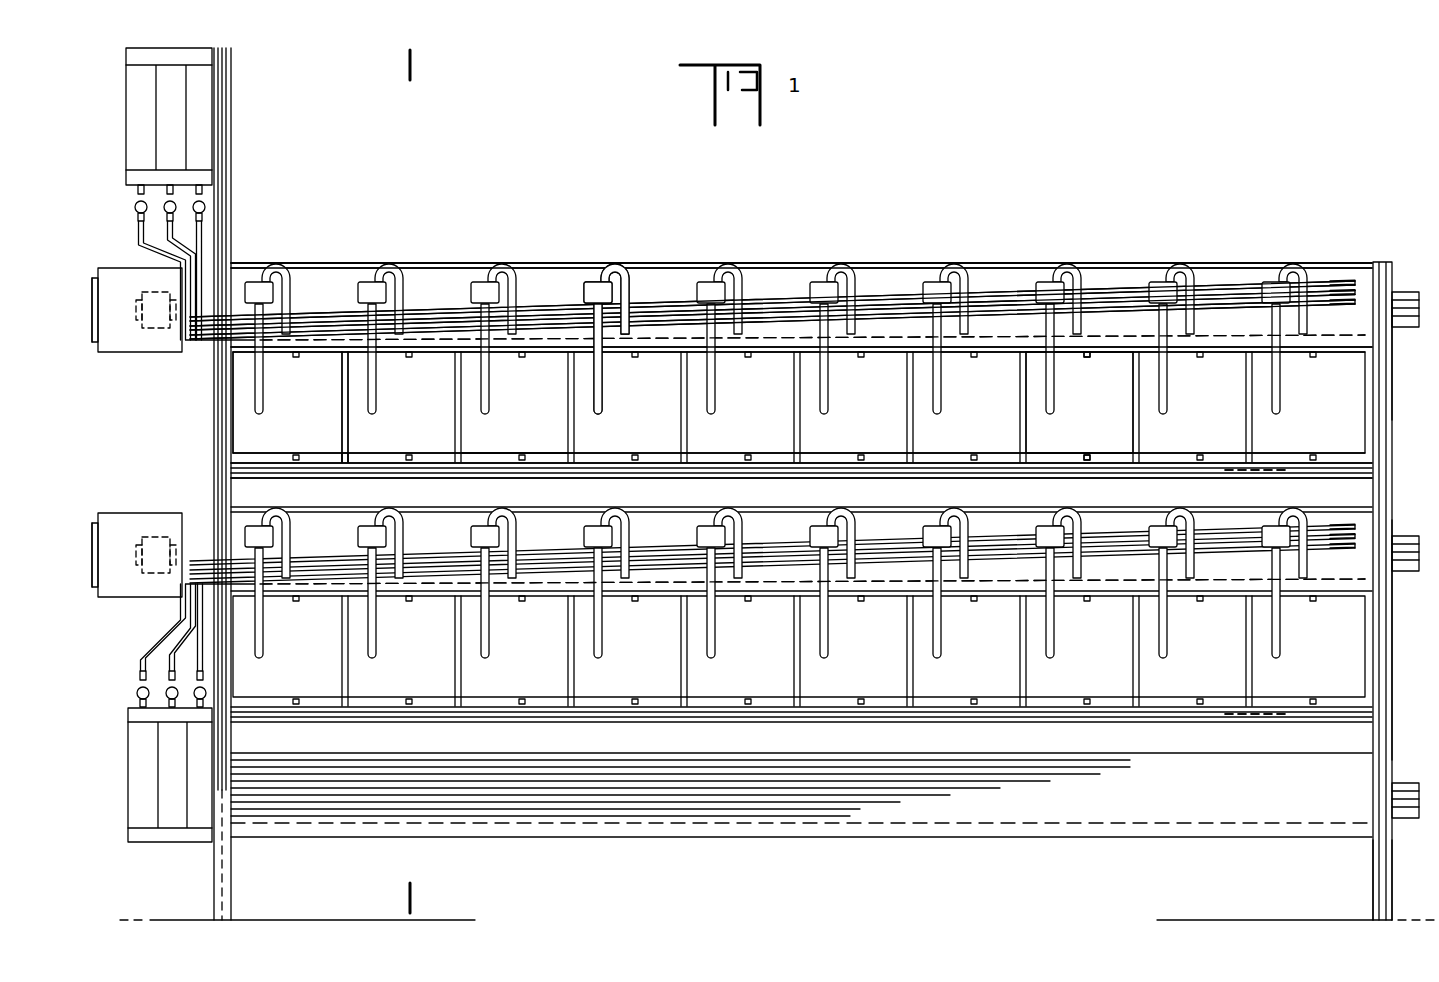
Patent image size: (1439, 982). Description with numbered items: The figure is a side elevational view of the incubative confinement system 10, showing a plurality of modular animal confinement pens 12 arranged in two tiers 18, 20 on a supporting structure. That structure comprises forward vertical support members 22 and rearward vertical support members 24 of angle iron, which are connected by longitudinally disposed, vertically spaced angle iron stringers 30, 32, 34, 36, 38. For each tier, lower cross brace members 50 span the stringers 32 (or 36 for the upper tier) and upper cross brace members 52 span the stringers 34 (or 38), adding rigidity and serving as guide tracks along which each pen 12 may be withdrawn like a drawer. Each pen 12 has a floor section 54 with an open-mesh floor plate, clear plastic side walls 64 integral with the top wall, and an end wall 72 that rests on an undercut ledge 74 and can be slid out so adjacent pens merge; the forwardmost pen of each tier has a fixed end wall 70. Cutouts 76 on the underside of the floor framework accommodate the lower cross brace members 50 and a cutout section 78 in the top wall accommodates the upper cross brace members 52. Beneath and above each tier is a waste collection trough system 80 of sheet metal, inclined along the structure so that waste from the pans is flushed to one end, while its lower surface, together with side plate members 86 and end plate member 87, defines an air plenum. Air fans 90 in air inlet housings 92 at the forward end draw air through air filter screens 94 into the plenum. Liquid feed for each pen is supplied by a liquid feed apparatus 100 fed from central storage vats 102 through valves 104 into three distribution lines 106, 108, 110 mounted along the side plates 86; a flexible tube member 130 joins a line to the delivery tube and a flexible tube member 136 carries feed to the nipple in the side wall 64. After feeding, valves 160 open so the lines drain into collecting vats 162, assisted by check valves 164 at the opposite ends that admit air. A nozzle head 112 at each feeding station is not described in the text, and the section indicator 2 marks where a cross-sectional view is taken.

The incubative confinement system 10 is at (1140, 190).
The modular animal confinement pen 12 is at (318, 402).
The tier 18 is at (1395, 655).
The tier 20 is at (1395, 400).
The forward vertical support member 22 is at (226, 222).
The rearward vertical support member 24 is at (1373, 860).
The longitudinal stringer 30 is at (1198, 824).
The longitudinal stringer 32 is at (1215, 716).
The longitudinal stringer 34 is at (1225, 582).
The longitudinal stringer 36 is at (1213, 472).
The longitudinal stringer 38 is at (1218, 338).
The lower cross brace member 50 is at (1085, 468).
The upper cross brace member 52 is at (1095, 351).
The floor section 54 is at (1096, 406).
The side wall segment 64 is at (557, 432).
The end wall 70 is at (236, 438).
The end wall 72 is at (349, 436).
The undercut ledge 74 is at (345, 464).
The cutout 76 is at (1088, 456).
The cutout section 78 is at (1091, 357).
The waste collection trough system 80 is at (1408, 290).
The side plate member 86 is at (771, 263).
The end plate member 87 is at (1393, 376).
The air fan 90 is at (146, 296).
The air inlet housing 92 is at (130, 339).
The air filter screen 94 is at (95, 270).
The liquid feed apparatus 100 is at (759, 438).
The central storage vat 102 is at (198, 110).
The valve 104 is at (158, 215).
The distribution line 106 is at (990, 292).
The distribution line 108 is at (990, 303).
The distribution line 110 is at (1000, 312).
The nozzle head 112 is at (584, 294).
The flexible tube member 130 is at (628, 284).
The flexible tube member 136 is at (603, 380).
The valve 160 is at (172, 686).
The collecting vat 162 is at (198, 766).
The check valve 164 is at (1350, 284).
The section line 2 is at (420, 60).